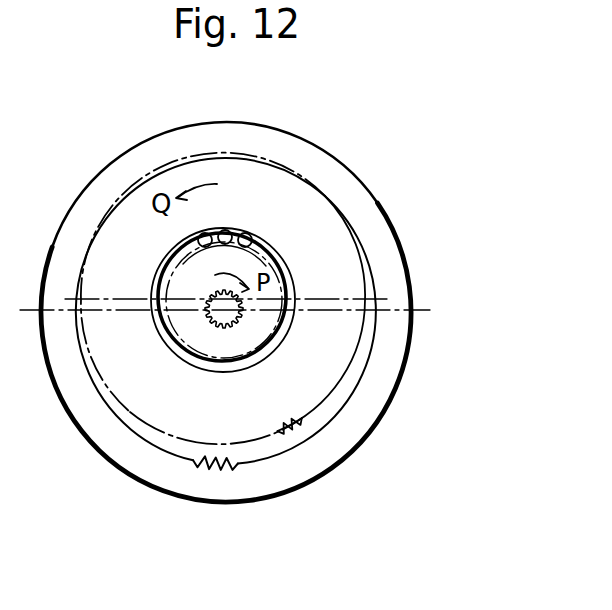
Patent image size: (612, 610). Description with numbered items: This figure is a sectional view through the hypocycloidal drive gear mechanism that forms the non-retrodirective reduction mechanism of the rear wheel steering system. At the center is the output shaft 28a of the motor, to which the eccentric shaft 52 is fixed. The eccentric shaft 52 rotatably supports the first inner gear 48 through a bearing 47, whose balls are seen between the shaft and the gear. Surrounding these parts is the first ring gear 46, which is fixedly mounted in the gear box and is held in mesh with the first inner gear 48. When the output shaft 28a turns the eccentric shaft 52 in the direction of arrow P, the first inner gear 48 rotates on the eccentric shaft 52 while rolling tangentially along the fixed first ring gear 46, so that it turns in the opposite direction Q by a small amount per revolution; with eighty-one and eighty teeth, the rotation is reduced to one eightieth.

The first ring gear 46 is at (382, 227).
The bearing 47 is at (252, 236).
The first inner gear 48 is at (343, 349).
The eccentric shaft 52 is at (195, 273).
The output shaft 28a is at (212, 321).